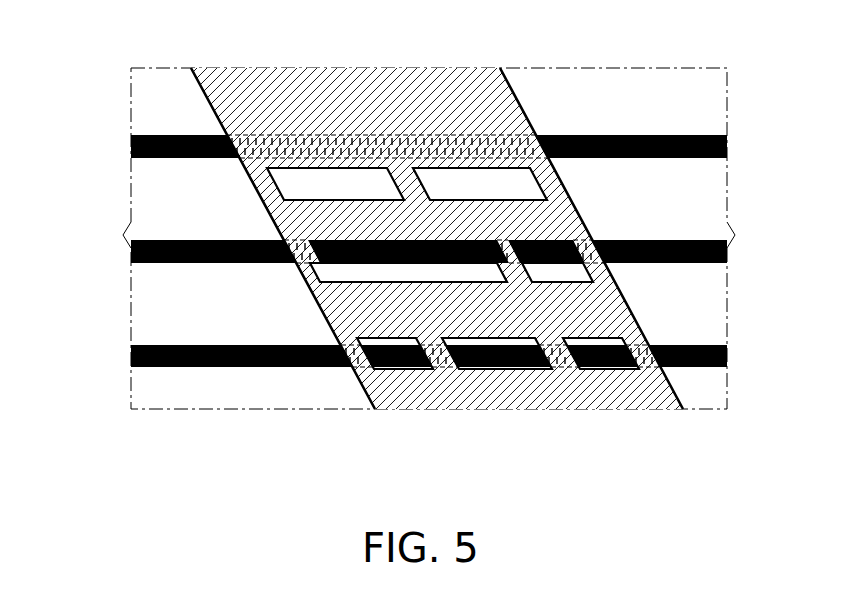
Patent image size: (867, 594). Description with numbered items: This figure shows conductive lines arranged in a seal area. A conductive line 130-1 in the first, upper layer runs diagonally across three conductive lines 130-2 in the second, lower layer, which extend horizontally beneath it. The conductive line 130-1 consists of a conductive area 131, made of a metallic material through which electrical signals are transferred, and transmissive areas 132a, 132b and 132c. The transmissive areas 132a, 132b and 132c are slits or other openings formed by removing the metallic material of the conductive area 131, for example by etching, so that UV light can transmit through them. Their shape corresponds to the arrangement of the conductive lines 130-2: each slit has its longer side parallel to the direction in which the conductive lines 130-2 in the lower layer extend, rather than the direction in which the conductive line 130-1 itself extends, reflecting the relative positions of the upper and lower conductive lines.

The conductive line in the first layer 130-1 is at (517, 97).
The conductive lines in the second layer 130-2 is at (131, 148).
The conductive area 131 is at (253, 88).
The transmissive area 132a is at (448, 180).
The transmissive area 132b is at (470, 273).
The transmissive area 132c is at (400, 370).